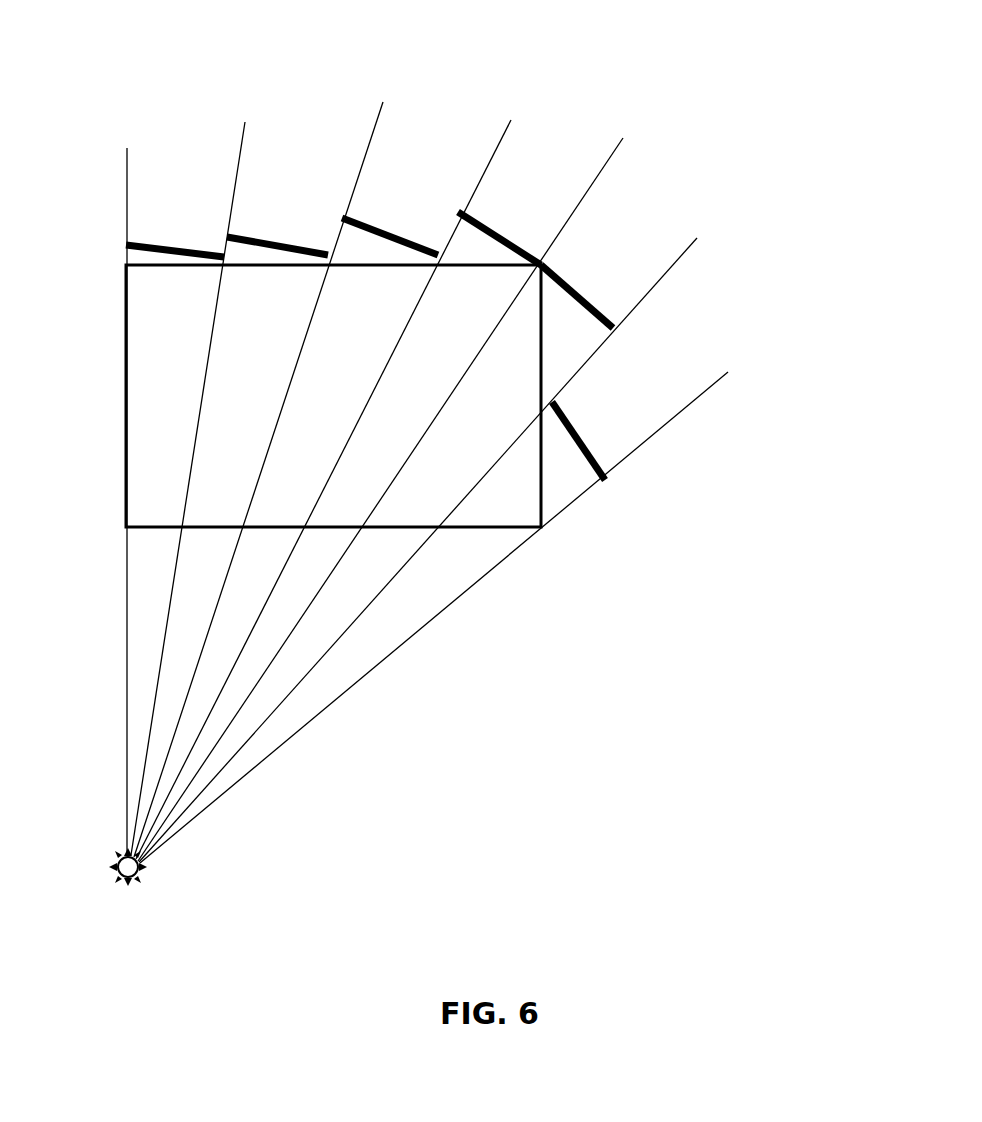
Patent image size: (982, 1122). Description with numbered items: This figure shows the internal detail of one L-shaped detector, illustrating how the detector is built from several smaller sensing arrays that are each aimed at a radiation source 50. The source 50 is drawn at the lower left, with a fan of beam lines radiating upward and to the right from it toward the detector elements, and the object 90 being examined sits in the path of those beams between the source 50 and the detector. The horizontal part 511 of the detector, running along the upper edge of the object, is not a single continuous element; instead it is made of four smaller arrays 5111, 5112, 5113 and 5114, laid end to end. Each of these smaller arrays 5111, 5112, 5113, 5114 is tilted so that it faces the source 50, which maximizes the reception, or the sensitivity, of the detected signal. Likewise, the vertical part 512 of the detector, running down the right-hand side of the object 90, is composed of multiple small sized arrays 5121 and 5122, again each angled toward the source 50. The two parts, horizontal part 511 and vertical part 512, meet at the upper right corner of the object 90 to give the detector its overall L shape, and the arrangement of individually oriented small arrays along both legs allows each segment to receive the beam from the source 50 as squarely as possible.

The source 50 is at (163, 880).
The target object 90 is at (145, 392).
The horizontal part 511 is at (373, 138).
The smaller array 5111 is at (181, 238).
The smaller array 5112 is at (283, 237).
The smaller array 5113 is at (392, 222).
The smaller array 5114 is at (522, 228).
The vertical part 512 is at (687, 351).
The small sized array 5121 is at (597, 292).
The small sized array 5122 is at (596, 448).